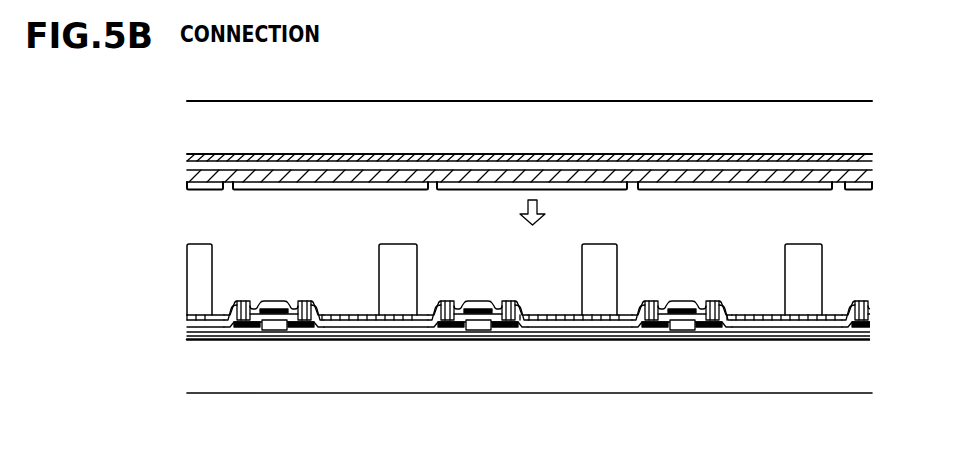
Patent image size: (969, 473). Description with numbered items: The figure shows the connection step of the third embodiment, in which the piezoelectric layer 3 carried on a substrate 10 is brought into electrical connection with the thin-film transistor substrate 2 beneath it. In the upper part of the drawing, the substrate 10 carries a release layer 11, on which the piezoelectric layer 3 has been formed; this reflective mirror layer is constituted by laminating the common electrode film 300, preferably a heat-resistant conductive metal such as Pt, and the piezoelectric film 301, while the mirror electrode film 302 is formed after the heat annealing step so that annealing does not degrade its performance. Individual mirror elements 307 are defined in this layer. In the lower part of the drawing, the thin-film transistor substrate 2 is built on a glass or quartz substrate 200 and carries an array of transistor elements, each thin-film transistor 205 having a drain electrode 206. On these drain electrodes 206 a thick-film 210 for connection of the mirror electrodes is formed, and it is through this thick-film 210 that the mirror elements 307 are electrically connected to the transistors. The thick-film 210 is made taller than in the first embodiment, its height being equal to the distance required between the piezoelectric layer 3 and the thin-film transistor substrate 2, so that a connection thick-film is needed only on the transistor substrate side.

The substrate 10 is at (715, 108).
The release layer 11 is at (662, 157).
The piezoelectric film 301 is at (777, 172).
The common electrode film 300 is at (728, 168).
The mirror electrode film 302 is at (826, 182).
The mirror element 307 is at (627, 151).
The piezoelectric layer 3 is at (881, 170).
The thick-film for connection of the mirror electrodes 210 is at (600, 260).
The thin-film transistor 205 is at (574, 299).
The drain electrode 206 is at (352, 337).
The substrate 200 is at (551, 395).
The thin-film transistor substrate 2 is at (564, 319).